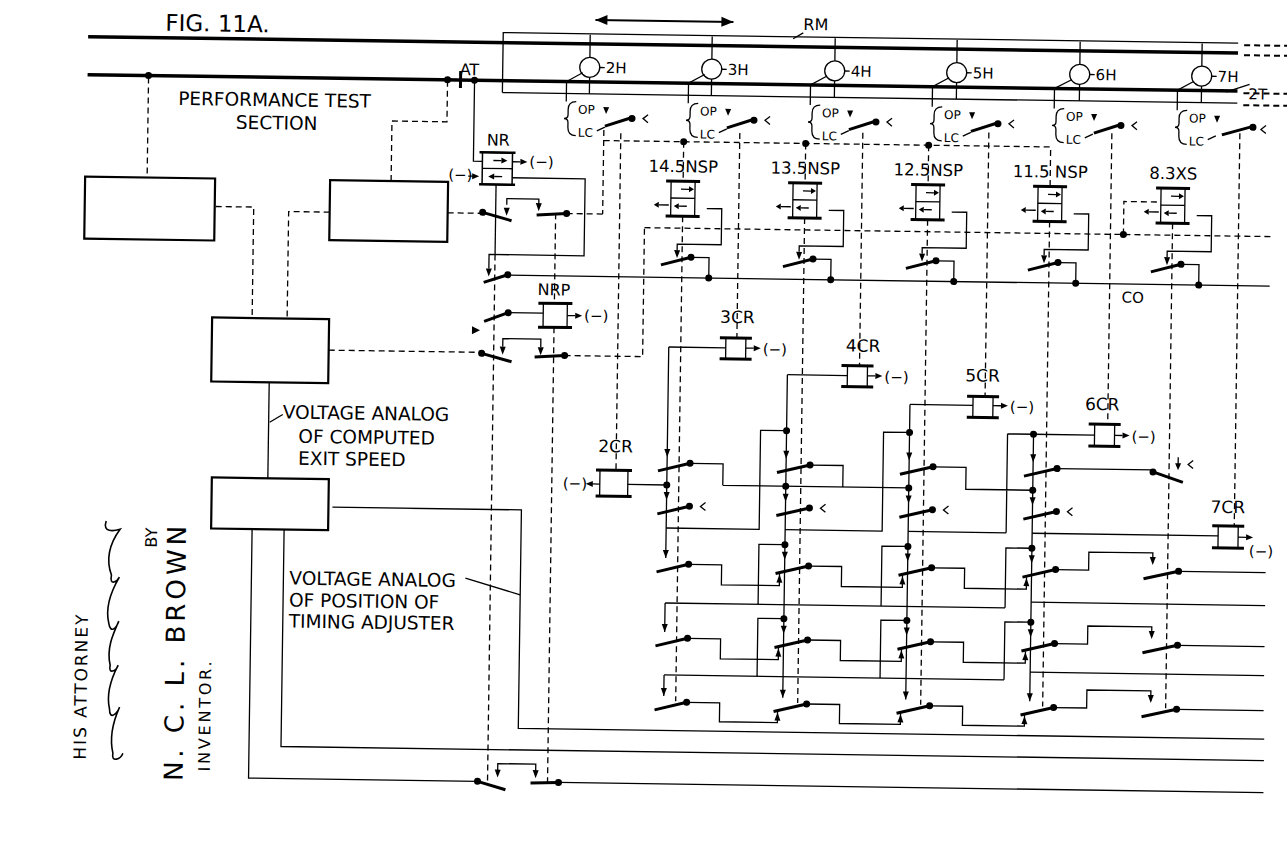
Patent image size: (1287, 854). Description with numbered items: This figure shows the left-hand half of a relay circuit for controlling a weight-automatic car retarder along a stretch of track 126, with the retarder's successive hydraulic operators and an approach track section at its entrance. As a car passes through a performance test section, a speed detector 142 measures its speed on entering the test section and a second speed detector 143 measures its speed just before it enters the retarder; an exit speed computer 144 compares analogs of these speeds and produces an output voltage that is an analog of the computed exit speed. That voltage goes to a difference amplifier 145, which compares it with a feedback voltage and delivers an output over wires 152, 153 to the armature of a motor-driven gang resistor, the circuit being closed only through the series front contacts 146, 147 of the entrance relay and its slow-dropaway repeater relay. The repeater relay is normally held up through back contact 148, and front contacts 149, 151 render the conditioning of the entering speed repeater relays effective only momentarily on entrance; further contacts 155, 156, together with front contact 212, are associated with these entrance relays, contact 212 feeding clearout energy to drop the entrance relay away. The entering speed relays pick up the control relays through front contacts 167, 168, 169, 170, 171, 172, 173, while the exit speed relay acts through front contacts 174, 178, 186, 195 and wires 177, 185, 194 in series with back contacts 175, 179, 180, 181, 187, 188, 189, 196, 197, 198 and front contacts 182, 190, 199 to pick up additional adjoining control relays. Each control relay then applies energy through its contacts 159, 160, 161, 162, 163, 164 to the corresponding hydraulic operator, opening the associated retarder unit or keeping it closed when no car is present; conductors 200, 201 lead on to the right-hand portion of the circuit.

The stretch of track 126 is at (377, 53).
The speed detector 142 is at (168, 173).
The speed detector 143 is at (410, 175).
The exit speed computer 144 is at (297, 324).
The difference amplifier 145 is at (335, 497).
The front contact of relay NR 146 is at (480, 785).
The front contact of relay NRP 147 is at (560, 785).
The back contact of relay NR 148 is at (490, 320).
The front contact of relay NR 149 is at (497, 222).
The front contact of relay NRP 151 is at (549, 212).
The wire 152 is at (1231, 755).
The wire 153 is at (896, 799).
The contact 155 is at (494, 363).
The contact 156 is at (555, 359).
The contact of relay 2CR 159 is at (639, 114).
The contact of relay 3CR 160 is at (761, 116).
The contact of relay 4CR 161 is at (883, 118).
The contact of relay 5CR 162 is at (1005, 119).
The contact of relay 6CR 163 is at (1128, 121).
The contact of relay 7CR 164 is at (1246, 133).
The front contact of relay 14.5NSP 167 is at (686, 509).
The front contact of relay 13.5NSP 168 is at (806, 509).
The contact of relay 14.5NSP 169 is at (686, 466).
The front contact of relay 12.5NSP 170 is at (929, 509).
The contact of relay 13.5NSP 171 is at (806, 466).
The front contact of relay 11.5NSP 172 is at (1053, 509).
The contact of relay 12.5NSP 173 is at (929, 466).
The front contact of relay 8.3XS 174 is at (1160, 458).
The back contact of relay 11.5NSP 175 is at (1053, 466).
The wire 177 is at (1237, 566).
The front contact of relay 8.3XS 178 is at (1174, 567).
The back contact of relay 11.5NSP 179 is at (1053, 567).
The back contact of relay 12.5NSP 180 is at (929, 567).
The back contact of relay 13.5NSP 181 is at (806, 567).
The front contact of relay 14.5NSP 182 is at (686, 567).
The wire 185 is at (1249, 630).
The front contact of relay 8.3XS 186 is at (1174, 641).
The back contact of relay 11.5NSP 187 is at (1053, 641).
The back contact of relay 12.5NSP 188 is at (929, 641).
The back contact of relay 13.5NSP 189 is at (806, 641).
The front contact of relay 14.5NSP 190 is at (686, 641).
The wire 194 is at (1234, 701).
The front contact of relay 8.3XS 195 is at (1166, 707).
The back contact of relay 11.5NSP 196 is at (1043, 707).
The back contact of relay 12.5NSP 197 is at (919, 707).
The back contact of relay 13.5NSP 198 is at (796, 707).
The front contact of relay 14.5NSP 199 is at (676, 707).
The conductor 200 is at (1217, 595).
The conductor 201 is at (1240, 667).
The front contact of relay NR 212 is at (484, 280).